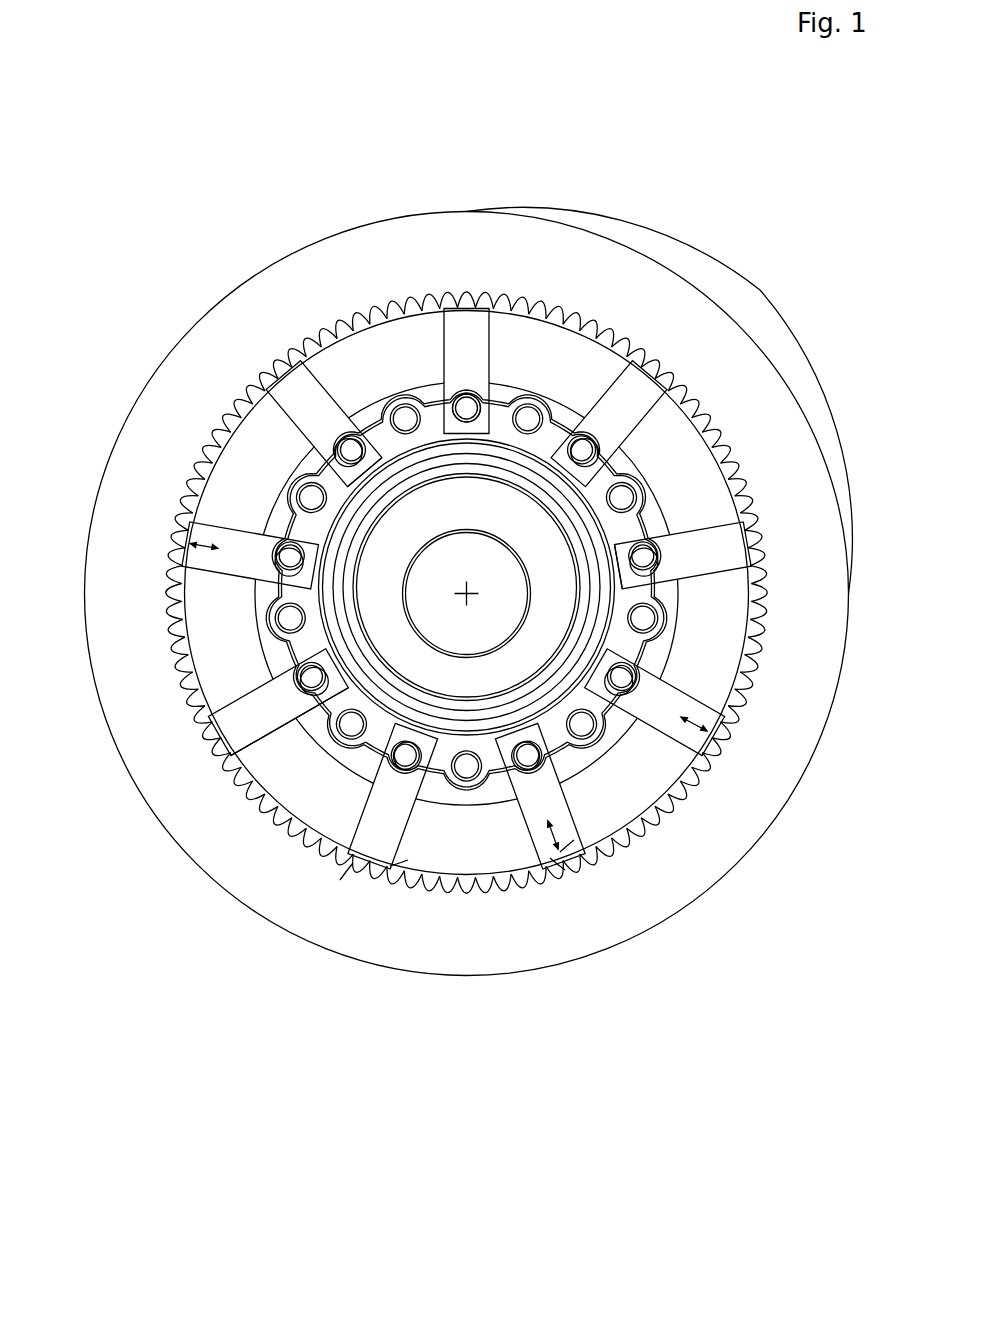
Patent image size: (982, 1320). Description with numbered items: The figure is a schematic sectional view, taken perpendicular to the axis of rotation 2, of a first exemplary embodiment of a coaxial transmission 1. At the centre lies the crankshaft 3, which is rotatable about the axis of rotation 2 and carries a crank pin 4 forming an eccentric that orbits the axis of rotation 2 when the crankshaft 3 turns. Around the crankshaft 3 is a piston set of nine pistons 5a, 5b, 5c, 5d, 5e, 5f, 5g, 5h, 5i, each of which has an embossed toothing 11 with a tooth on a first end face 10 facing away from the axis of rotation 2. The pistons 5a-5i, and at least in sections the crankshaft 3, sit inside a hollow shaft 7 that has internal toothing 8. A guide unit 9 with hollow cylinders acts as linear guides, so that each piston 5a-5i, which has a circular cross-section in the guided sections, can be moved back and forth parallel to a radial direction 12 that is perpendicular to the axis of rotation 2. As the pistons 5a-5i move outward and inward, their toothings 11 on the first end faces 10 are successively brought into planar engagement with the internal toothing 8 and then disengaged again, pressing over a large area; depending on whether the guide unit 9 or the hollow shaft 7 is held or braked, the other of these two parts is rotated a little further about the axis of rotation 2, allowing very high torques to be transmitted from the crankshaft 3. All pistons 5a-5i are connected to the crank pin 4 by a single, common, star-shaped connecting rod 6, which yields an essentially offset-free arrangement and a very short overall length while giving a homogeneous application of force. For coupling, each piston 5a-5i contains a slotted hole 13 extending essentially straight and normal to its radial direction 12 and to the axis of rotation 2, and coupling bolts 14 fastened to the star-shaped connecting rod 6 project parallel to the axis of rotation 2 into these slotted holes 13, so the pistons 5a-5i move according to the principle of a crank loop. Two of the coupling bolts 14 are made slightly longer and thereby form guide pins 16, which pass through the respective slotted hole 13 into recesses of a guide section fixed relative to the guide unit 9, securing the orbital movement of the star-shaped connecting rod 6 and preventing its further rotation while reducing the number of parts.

The coaxial transmission 1 is at (220, 138).
The axis of rotation 2 is at (357, 612).
The crankshaft 3 is at (504, 580).
The crank pin 4 is at (261, 621).
The piston 5a is at (473, 318).
The piston 5b is at (295, 390).
The piston 5c is at (215, 536).
The piston 5d is at (257, 723).
The piston 5e is at (372, 815).
The piston 5f is at (537, 803).
The piston 5g is at (668, 715).
The piston 5h is at (687, 553).
The piston 5i is at (600, 425).
The star-shaped connecting rod 6 is at (560, 395).
The hollow shaft 7 is at (641, 247).
The internal toothing 8 is at (404, 593).
The guide unit 9 is at (391, 345).
The first end face 10 is at (474, 949).
The toothing 11 is at (415, 976).
The radial direction 12 is at (451, 837).
The slotted hole 13 is at (652, 570).
The coupling bolt 14 is at (352, 448).
The guide pin 16 is at (470, 405).